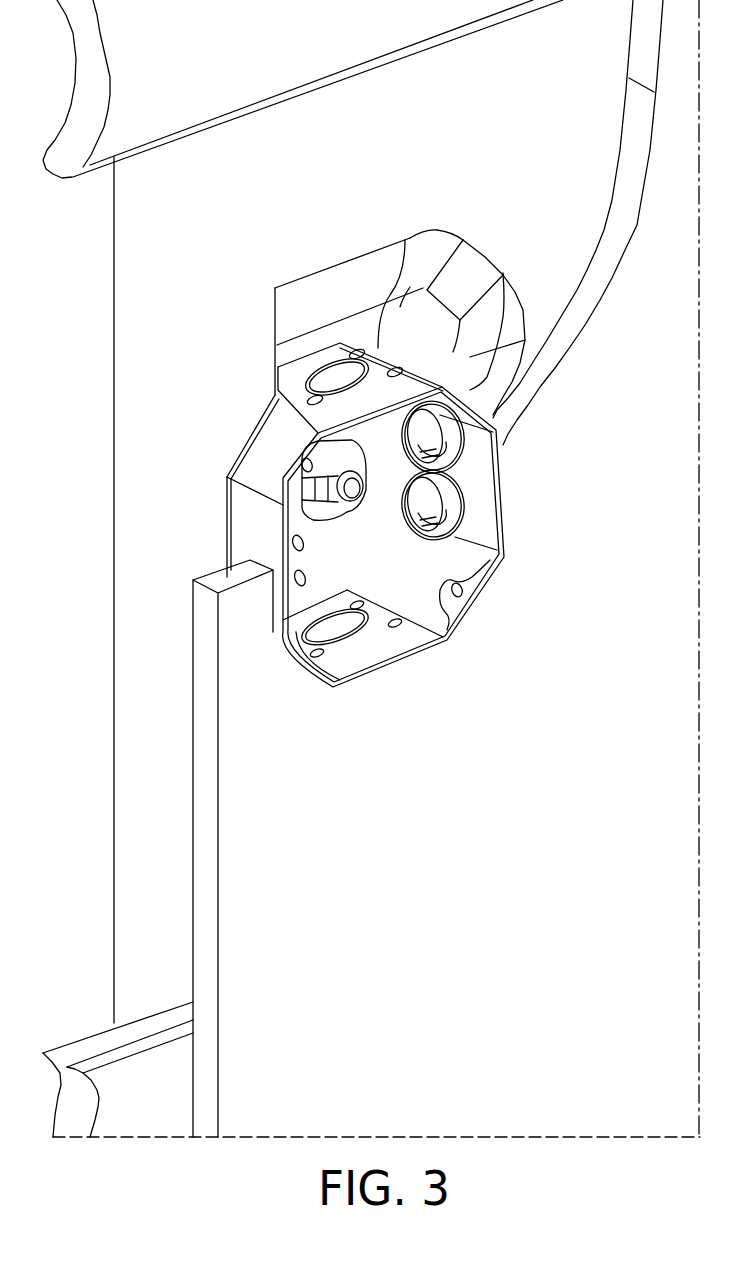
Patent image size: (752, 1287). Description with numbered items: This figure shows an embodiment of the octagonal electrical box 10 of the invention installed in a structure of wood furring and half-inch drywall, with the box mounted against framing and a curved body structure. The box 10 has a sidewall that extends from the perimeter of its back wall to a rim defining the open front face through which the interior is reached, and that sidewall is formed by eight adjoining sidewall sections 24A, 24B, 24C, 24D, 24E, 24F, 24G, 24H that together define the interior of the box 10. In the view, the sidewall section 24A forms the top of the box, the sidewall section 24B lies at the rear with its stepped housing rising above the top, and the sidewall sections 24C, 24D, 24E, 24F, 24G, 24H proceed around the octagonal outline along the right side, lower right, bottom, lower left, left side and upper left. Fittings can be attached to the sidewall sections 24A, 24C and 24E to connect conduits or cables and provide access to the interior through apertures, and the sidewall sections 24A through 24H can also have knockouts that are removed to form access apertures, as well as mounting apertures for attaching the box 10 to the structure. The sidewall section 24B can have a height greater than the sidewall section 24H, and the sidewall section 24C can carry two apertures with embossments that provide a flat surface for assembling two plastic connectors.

The octagonal electrical box 10 is at (540, 488).
The sidewall section 24A is at (377, 367).
The sidewall section 24B is at (500, 283).
The sidewall section 24C is at (503, 510).
The sidewall section 24D is at (473, 577).
The sidewall section 24E is at (407, 657).
The sidewall section 24F is at (293, 657).
The sidewall section 24G is at (255, 530).
The sidewall section 24H is at (270, 442).